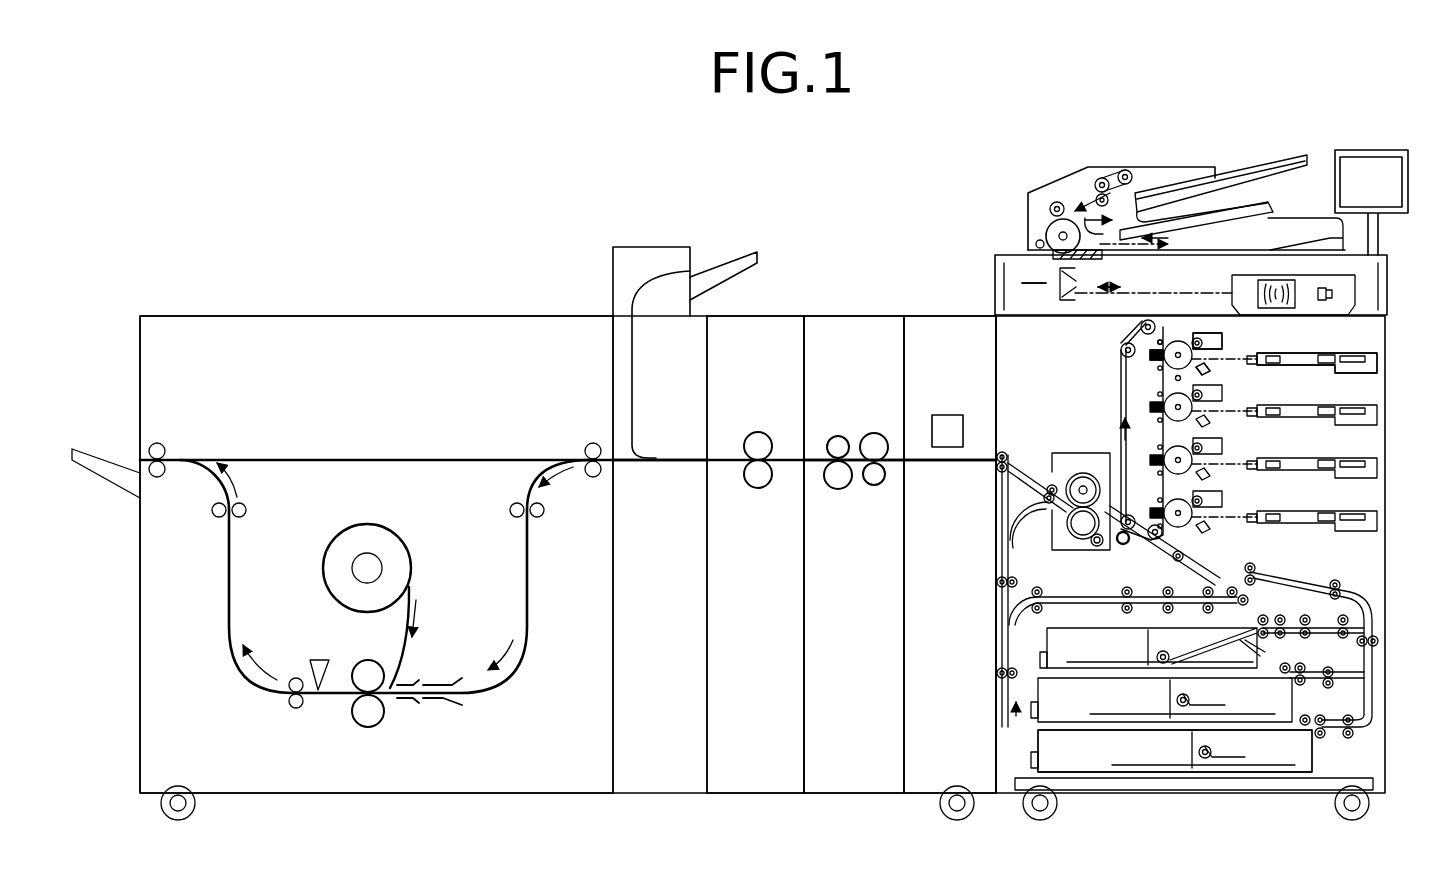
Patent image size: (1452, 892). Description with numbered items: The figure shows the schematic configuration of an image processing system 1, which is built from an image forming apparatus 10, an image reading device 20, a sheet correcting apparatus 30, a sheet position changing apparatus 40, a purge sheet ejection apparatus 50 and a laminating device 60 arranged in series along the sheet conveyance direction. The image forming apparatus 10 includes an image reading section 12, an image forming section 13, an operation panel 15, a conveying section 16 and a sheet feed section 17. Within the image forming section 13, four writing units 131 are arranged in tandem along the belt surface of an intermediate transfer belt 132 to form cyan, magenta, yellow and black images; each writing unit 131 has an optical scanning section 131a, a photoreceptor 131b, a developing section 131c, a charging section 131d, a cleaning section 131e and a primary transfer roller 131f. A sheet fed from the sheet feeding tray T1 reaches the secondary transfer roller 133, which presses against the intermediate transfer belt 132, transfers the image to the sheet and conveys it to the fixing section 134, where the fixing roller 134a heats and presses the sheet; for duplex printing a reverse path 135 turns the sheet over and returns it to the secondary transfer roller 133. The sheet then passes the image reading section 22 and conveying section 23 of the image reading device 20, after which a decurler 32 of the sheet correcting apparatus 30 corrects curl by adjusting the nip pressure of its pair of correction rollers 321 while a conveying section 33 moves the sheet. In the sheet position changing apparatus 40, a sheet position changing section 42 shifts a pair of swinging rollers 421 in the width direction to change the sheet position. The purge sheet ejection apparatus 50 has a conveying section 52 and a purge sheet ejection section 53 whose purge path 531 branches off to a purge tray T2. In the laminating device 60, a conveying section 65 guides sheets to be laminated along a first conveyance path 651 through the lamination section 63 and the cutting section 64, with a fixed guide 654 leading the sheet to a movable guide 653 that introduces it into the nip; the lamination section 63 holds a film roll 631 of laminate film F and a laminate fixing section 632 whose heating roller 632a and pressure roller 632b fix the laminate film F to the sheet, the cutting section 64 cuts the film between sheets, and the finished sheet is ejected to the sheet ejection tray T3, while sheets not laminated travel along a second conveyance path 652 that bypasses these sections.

The image processing system 1 is at (902, 100).
The image forming apparatus 10 is at (1318, 145).
The image reading section 12 is at (1027, 218).
The image forming section 13 is at (1055, 357).
The operation panel 15 is at (1379, 151).
The conveying section 16 is at (1293, 578).
The sheet feed section 17 is at (1378, 668).
The image reading device 20 is at (934, 316).
The image reading section 22 is at (948, 415).
The conveying section 23 is at (970, 466).
The sheet correcting apparatus 30 is at (850, 316).
The decurler 32 is at (863, 420).
The pair of correction rollers 321 is at (827, 475).
The conveying section 33 is at (897, 466).
The sheet position changing apparatus 40 is at (764, 316).
The sheet position changing section 42 is at (755, 420).
The pair of swinging rollers 421 is at (757, 478).
The purge sheet ejection apparatus 50 is at (655, 228).
The conveying section 52 is at (686, 466).
The purge sheet ejection section 53 is at (645, 333).
The purge path 531 is at (635, 410).
The laminating device 60 is at (283, 312).
The lamination section 63 is at (345, 625).
The film roll 631 is at (330, 556).
The laminate fixing section 632 is at (262, 730).
The heating roller 632a is at (363, 677).
The pressure roller 632b is at (363, 720).
The cutting section 64 is at (313, 660).
The conveying section 65 is at (557, 442).
The first conveyance path 651 is at (528, 490).
The second conveyance path 652 is at (392, 458).
The movable guide 653 is at (403, 703).
The fixed guide 654 is at (445, 698).
The writing unit 131 is at (1367, 350).
The optical scanning section 131a is at (1282, 357).
The photoreceptor 131b is at (1160, 343).
The developing section 131c is at (1222, 345).
The charging section 131d is at (1206, 370).
The cleaning section 131e is at (1180, 378).
The primary transfer roller 131f is at (1150, 355).
The intermediate transfer belt 132 is at (1120, 413).
The secondary transfer roller 133 is at (1122, 543).
The fixing section 134 is at (1075, 455).
The fixing roller 134a is at (1083, 528).
The reverse path 135 is at (1000, 628).
The sheet feeding tray T1 is at (1025, 758).
The purge tray T2 is at (740, 260).
The sheet ejection tray T3 is at (90, 460).
The laminate film F is at (400, 636).